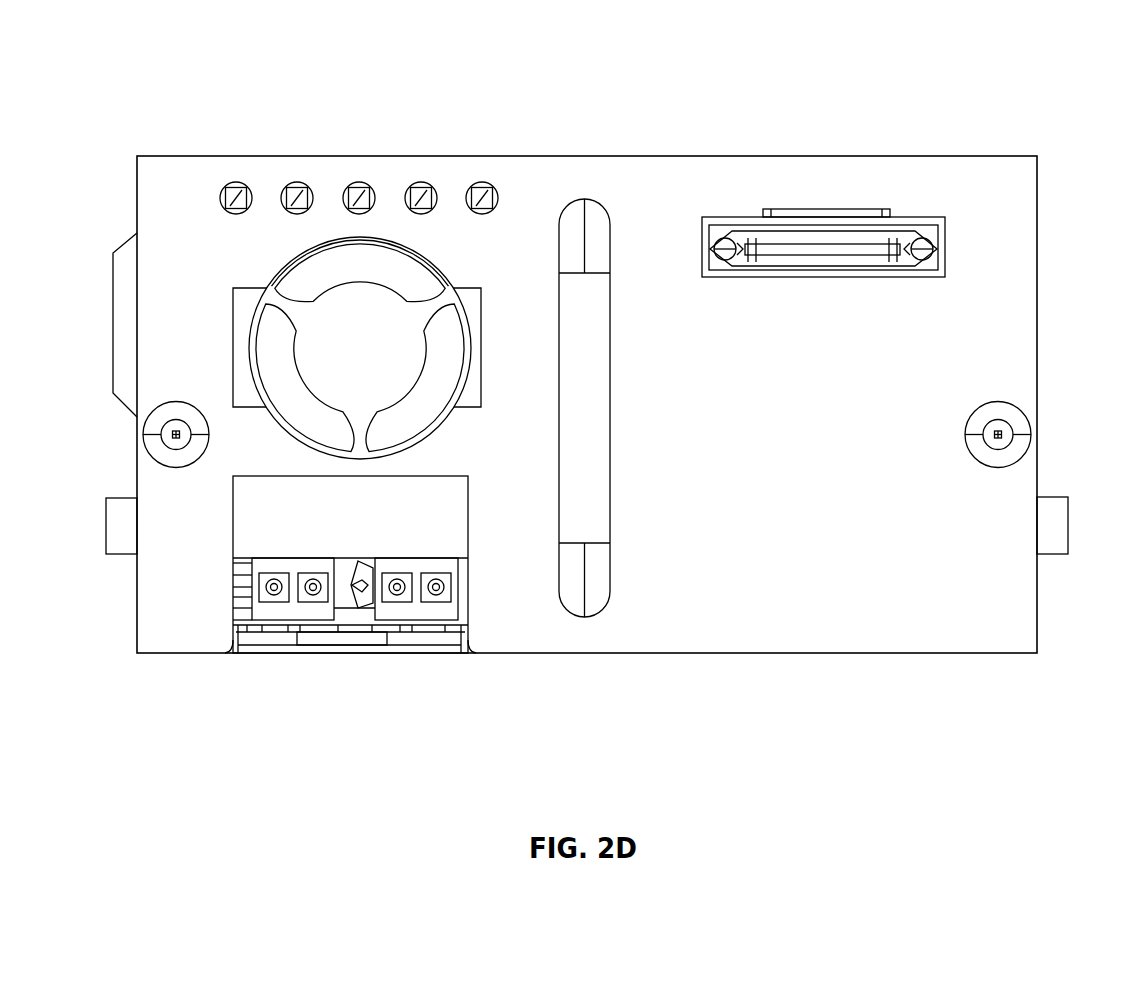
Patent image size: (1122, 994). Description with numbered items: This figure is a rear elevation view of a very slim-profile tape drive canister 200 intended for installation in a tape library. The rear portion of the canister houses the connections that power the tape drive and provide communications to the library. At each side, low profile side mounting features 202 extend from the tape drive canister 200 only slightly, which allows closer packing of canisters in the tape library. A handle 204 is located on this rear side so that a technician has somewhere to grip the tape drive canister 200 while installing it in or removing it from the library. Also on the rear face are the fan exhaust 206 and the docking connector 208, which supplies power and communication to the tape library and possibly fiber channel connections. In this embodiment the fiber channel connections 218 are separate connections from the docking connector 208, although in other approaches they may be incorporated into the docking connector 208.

The tape drive canister 200 is at (284, 80).
The low profile side mounting features 202 is at (106, 527).
The handle 204 is at (580, 617).
The fan exhaust 206 is at (474, 264).
The docking connector 208 is at (915, 218).
The fiber channel connections 218 is at (338, 666).